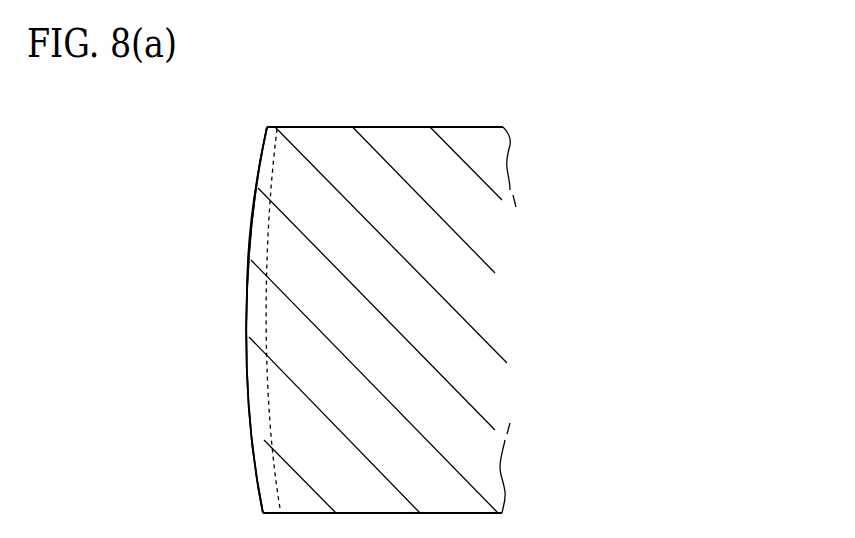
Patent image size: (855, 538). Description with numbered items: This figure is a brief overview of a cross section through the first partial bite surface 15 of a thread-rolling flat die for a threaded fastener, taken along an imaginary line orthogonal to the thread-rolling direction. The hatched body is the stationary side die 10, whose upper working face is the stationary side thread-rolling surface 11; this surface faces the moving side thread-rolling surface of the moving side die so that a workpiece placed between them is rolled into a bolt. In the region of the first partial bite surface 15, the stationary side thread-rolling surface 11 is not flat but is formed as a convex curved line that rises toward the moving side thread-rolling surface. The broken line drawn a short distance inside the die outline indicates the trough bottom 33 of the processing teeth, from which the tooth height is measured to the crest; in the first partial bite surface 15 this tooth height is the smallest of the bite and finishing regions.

The stationary side die 10 is at (563, 108).
The stationary side thread-rolling surface 11 is at (258, 173).
The first partial bite surface 15 is at (248, 323).
The trough bottom 33 is at (253, 398).